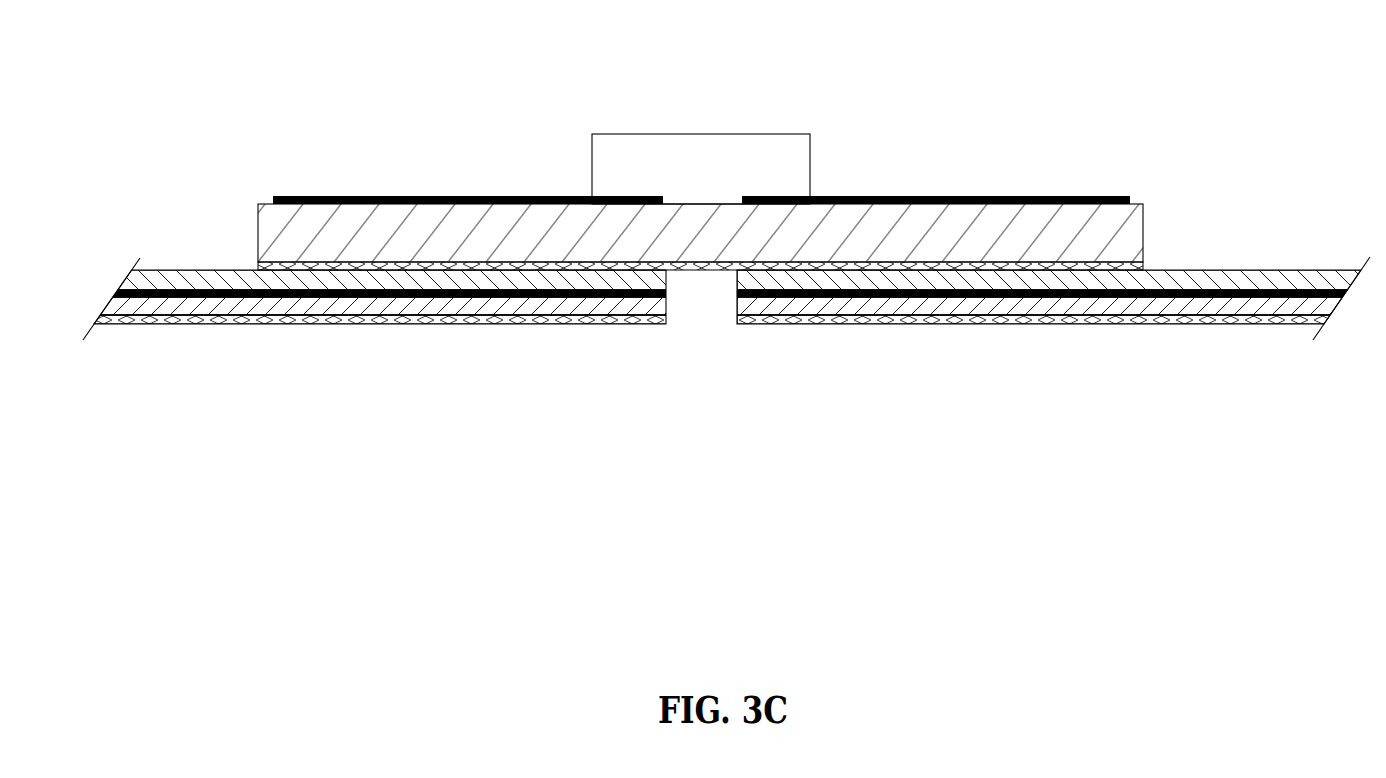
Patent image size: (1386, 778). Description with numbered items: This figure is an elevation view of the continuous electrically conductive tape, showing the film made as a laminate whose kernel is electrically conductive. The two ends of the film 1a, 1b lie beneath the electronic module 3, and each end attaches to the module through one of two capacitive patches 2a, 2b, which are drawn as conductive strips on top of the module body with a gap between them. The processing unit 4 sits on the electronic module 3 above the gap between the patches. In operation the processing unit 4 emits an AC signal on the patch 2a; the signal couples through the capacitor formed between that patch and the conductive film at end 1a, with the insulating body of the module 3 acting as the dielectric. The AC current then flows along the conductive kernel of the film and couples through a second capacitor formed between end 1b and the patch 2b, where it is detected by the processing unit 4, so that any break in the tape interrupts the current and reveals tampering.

The end of the film 1a is at (1053, 191).
The end of the film 1b is at (376, 191).
The capacitive patch 2a is at (936, 123).
The capacitive patch 2b is at (468, 123).
The electronic module 3 is at (700, 156).
The processing unit 4 is at (701, 123).